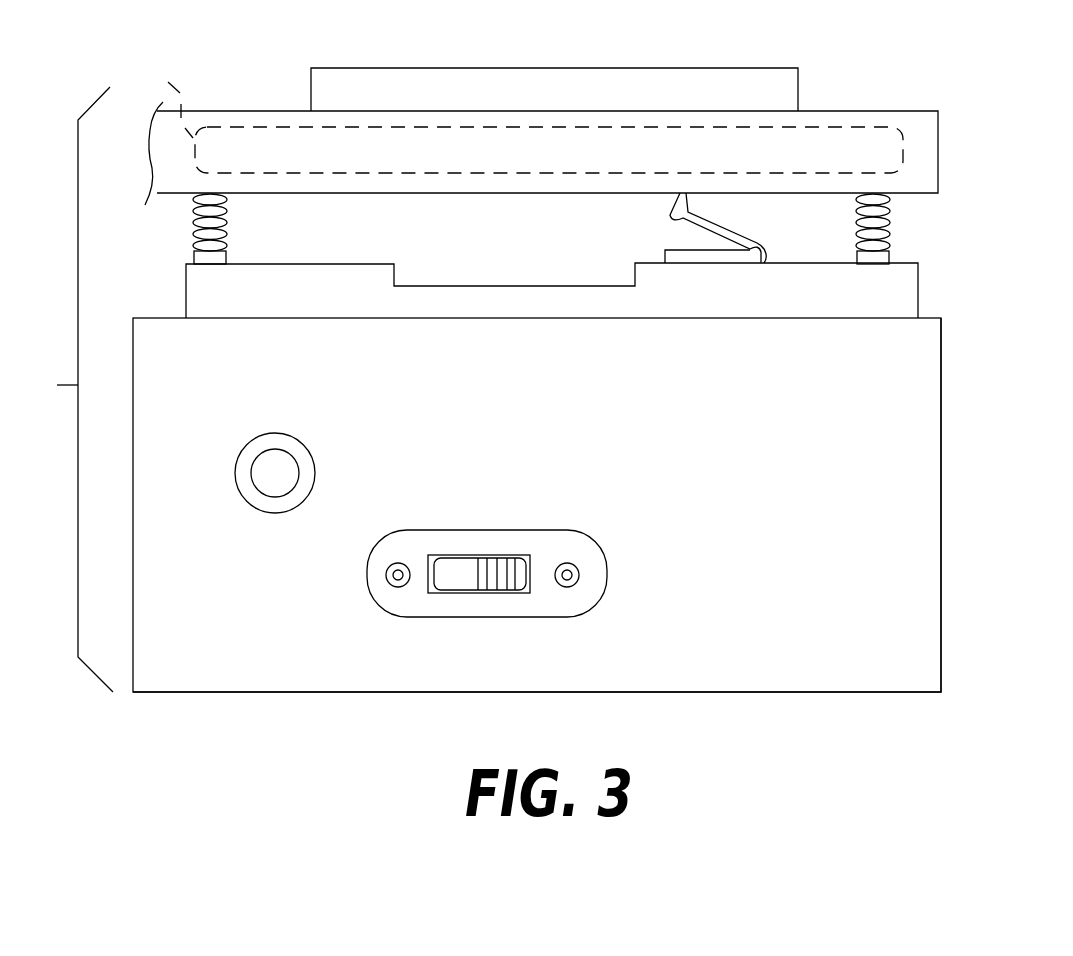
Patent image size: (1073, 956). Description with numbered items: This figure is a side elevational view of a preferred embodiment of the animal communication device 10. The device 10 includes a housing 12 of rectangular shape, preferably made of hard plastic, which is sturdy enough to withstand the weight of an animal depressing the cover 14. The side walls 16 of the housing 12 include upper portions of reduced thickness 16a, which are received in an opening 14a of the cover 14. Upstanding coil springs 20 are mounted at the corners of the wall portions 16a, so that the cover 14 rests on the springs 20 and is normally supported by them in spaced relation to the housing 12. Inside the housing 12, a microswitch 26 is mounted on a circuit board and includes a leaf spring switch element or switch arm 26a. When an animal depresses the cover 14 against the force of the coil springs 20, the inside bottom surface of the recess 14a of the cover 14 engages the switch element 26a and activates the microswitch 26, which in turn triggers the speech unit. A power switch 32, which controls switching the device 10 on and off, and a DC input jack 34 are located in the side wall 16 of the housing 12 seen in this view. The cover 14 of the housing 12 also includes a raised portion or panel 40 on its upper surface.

The animal communication device 10 is at (960, 519).
The housing 12 is at (921, 606).
The cover 14 is at (930, 140).
The opening of cover 14a is at (171, 95).
The side walls 16 is at (925, 408).
The upper portion of side wall of reduced thickness 16a is at (357, 305).
The coil springs 20 is at (228, 230).
The microswitch 26 is at (715, 260).
The leaf spring switch element 26a is at (670, 219).
The power switch 32 is at (532, 570).
The DC input jack 34 is at (303, 456).
The raised panel 40 is at (790, 89).